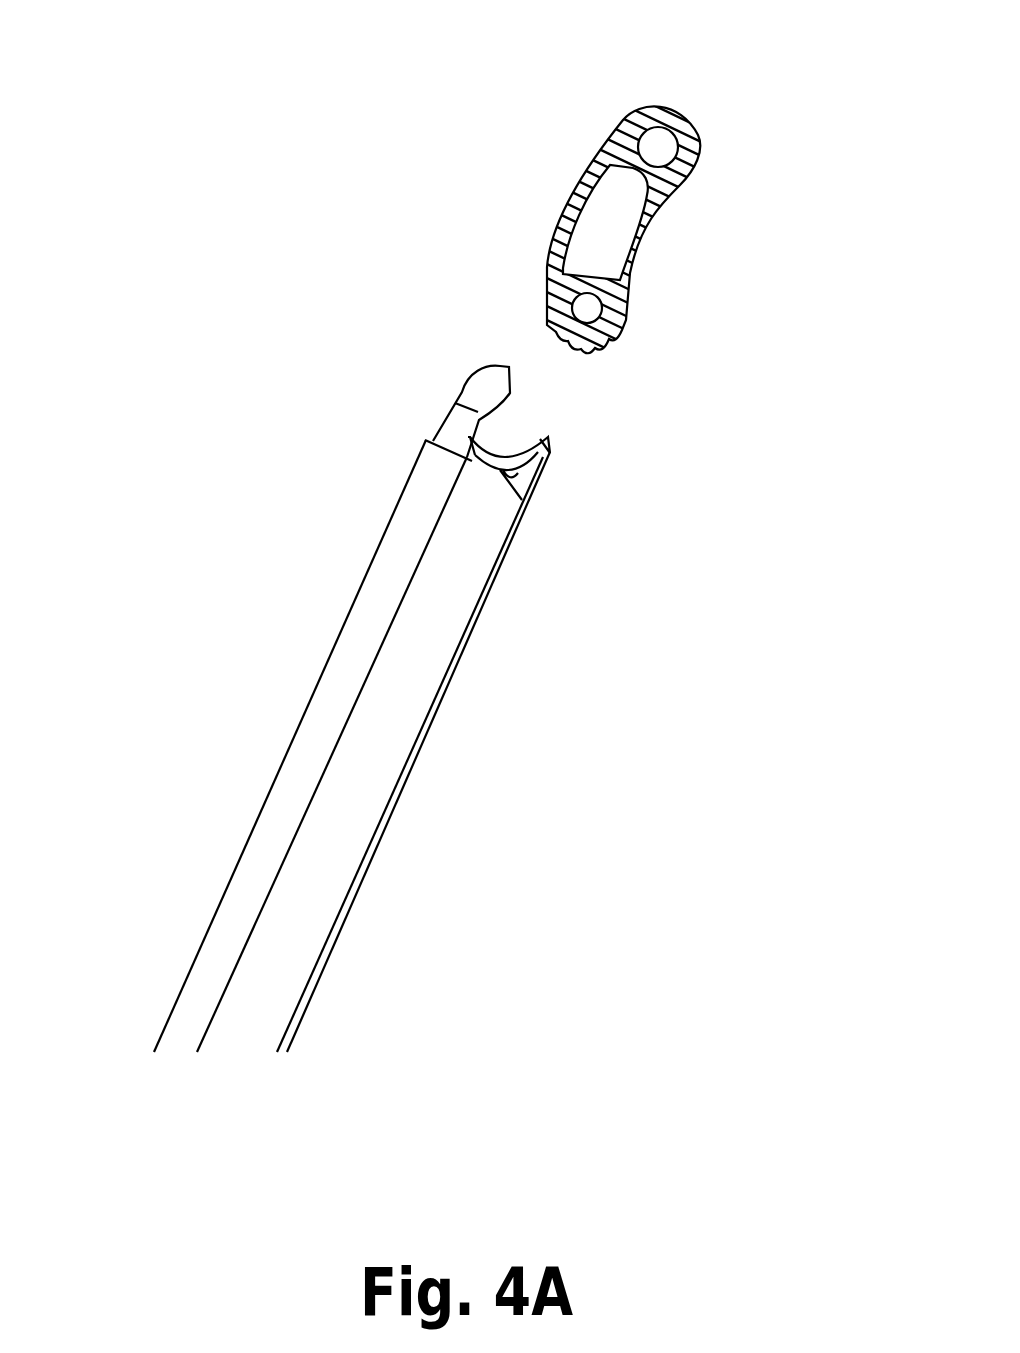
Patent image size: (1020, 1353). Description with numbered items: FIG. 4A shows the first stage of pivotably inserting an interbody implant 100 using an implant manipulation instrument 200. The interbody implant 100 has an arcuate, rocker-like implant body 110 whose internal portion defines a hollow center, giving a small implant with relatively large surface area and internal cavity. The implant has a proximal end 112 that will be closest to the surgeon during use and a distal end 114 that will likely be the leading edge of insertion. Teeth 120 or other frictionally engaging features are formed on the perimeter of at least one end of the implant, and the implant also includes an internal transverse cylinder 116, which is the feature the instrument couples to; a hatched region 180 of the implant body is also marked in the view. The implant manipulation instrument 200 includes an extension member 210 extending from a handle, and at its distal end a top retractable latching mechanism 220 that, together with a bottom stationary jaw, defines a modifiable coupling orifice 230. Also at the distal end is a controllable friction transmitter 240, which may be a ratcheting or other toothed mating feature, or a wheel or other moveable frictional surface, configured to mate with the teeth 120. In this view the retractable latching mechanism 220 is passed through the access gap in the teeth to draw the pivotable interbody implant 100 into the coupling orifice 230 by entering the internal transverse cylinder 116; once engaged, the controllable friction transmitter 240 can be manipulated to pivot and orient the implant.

The interbody implant 100 is at (468, 43).
The implant body 110 is at (627, 118).
The proximal end 112 is at (605, 386).
The distal end 114 is at (715, 85).
The internal transverse cylinder 116 is at (566, 266).
The teeth 120 is at (657, 385).
The side surface 180 is at (713, 232).
The implant manipulation instrument 200 is at (350, 659).
The extension member 210 is at (273, 783).
The retractable latching mechanism 220 is at (463, 392).
The coupling orifice 230 is at (534, 376).
The controllable friction transmitter 240 is at (527, 503).